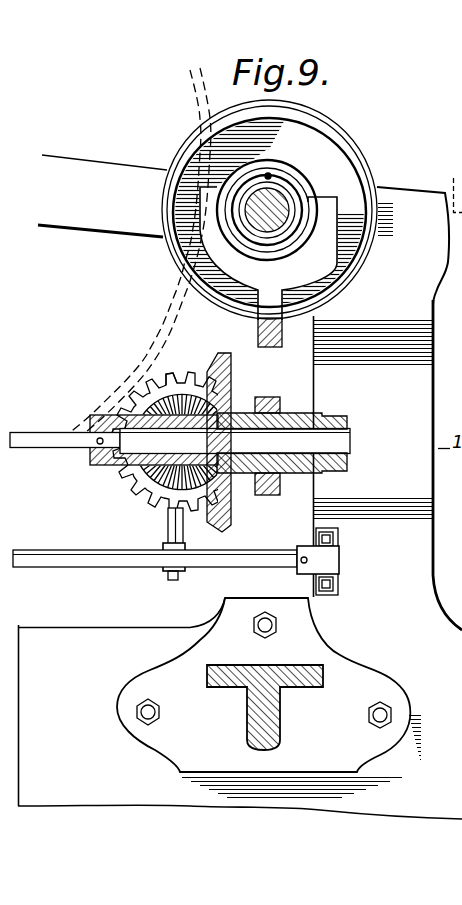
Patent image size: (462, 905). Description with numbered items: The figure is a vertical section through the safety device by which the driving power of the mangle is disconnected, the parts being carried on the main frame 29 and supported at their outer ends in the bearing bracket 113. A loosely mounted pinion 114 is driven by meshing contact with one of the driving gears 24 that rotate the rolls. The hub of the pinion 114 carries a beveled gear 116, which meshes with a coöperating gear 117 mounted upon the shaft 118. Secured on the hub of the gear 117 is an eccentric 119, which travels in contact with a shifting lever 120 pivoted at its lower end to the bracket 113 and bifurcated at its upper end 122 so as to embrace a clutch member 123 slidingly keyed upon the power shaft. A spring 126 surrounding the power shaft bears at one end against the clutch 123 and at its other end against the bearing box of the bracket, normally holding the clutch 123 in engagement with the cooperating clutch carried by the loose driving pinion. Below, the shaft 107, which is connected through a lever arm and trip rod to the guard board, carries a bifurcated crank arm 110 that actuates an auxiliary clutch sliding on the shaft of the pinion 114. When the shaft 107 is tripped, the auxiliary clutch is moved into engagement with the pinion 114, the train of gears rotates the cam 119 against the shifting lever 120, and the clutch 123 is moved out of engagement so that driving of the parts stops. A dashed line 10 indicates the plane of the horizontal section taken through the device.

The machine frame 10 is at (451, 181).
The driving gears 24 is at (178, 306).
The main frame 29 is at (388, 465).
The shaft 107 is at (53, 549).
The bifurcated crank arm 110 is at (167, 524).
The bearing bracket 113 is at (266, 665).
The pinion 114 is at (181, 371).
The beveled gear 116 is at (140, 406).
The gear 117 is at (232, 366).
The shaft 118 is at (336, 440).
The eccentric 119 is at (268, 399).
The shifting lever 120 is at (280, 267).
The upper end of shifting lever 122 is at (413, 246).
The clutch member 123 is at (303, 187).
The spring 126 is at (258, 172).